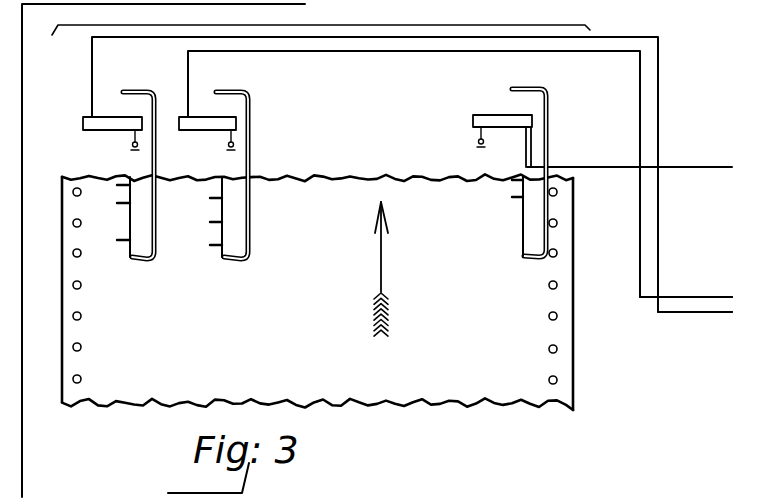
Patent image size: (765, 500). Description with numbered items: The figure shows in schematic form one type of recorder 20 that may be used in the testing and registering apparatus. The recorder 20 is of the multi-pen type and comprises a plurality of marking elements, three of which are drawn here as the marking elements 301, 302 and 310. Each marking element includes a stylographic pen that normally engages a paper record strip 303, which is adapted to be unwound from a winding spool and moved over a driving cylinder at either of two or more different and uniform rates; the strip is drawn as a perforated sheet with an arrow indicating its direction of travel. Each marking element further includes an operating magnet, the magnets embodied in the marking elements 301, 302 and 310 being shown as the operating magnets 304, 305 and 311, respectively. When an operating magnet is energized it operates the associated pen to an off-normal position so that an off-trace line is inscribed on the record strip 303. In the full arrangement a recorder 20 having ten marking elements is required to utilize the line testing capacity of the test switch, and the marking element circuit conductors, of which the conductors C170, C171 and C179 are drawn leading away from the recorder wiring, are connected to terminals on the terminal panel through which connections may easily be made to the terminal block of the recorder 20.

The recorder 20 is at (343, 25).
The marking element 301 is at (157, 74).
The marking element 302 is at (250, 152).
The paper record strip 303 is at (503, 403).
The operating magnet 304 is at (125, 131).
The operating magnet 305 is at (220, 131).
The marking element 310 is at (548, 140).
The operating magnet 311 is at (477, 128).
The marking element circuit conductor C179 is at (716, 166).
The marking element circuit conductor C171 is at (714, 296).
The marking element circuit conductor C170 is at (731, 312).